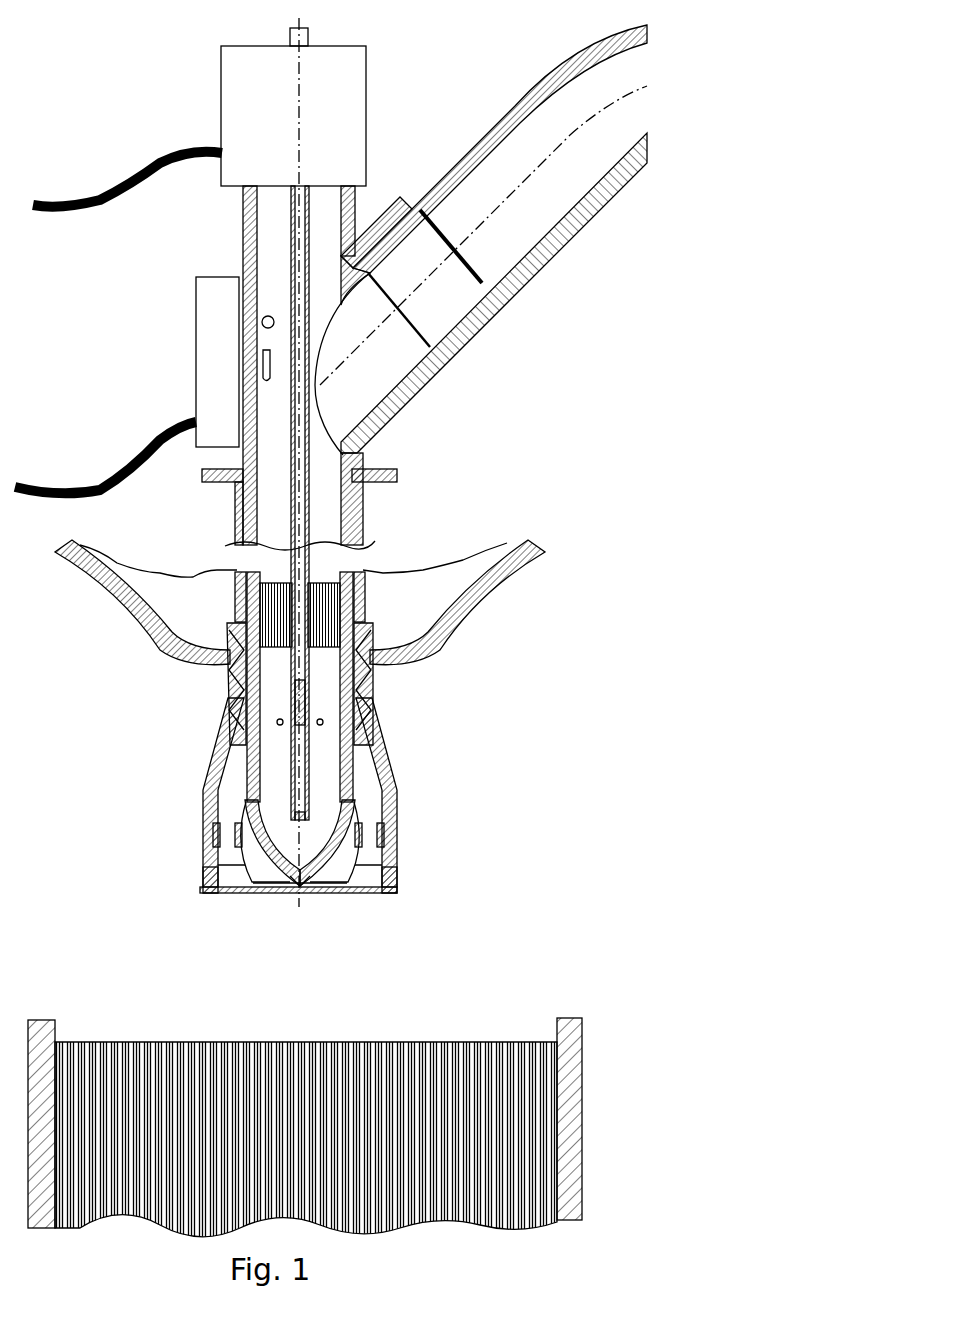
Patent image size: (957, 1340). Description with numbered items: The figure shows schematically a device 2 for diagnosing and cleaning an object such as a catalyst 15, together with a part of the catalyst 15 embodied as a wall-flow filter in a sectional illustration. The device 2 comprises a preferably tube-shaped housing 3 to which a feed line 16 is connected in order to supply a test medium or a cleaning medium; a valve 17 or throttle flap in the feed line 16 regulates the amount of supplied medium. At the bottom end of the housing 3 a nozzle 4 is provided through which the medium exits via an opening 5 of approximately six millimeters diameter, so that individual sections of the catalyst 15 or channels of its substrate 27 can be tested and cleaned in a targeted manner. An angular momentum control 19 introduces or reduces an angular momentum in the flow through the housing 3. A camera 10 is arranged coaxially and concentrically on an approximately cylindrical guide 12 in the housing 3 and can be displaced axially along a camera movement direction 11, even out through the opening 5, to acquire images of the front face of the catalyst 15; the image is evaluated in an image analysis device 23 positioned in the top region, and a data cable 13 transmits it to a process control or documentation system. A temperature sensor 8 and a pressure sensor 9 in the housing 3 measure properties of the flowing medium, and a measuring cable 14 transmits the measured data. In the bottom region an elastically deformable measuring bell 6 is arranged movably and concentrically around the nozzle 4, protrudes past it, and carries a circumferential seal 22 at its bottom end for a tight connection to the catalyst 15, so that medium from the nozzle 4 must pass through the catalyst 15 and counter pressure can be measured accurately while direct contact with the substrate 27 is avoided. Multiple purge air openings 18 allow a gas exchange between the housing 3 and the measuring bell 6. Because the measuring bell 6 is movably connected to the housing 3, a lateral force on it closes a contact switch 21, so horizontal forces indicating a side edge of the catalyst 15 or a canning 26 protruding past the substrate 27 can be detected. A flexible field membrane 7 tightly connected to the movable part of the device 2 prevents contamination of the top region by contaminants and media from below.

The device 2 is at (122, 98).
The housing 3 is at (243, 250).
The nozzle 4 is at (300, 870).
The opening 5 is at (307, 877).
The measuring bell 6 is at (393, 853).
The field membrane 7 is at (160, 650).
The temperature sensor 8 is at (262, 318).
The pressure sensor 9 is at (240, 391).
The camera 10 is at (318, 800).
The camera movement direction 11 is at (307, 710).
The guide 12 is at (308, 527).
The data cable 13 is at (126, 192).
The measuring cable 14 is at (82, 486).
The catalyst 15 is at (121, 1015).
The feed line 16 is at (530, 255).
The valve 17 is at (475, 268).
The purge air openings 18 is at (377, 723).
The angular momentum control 19 is at (330, 625).
The contact switch 21 is at (217, 838).
The circumferential seal 22 is at (200, 887).
The image analysis device 23 is at (255, 110).
The canning 26 is at (560, 1018).
The substrate 27 is at (287, 1042).